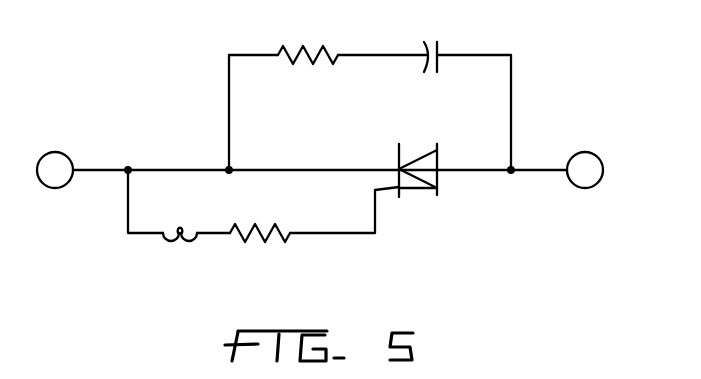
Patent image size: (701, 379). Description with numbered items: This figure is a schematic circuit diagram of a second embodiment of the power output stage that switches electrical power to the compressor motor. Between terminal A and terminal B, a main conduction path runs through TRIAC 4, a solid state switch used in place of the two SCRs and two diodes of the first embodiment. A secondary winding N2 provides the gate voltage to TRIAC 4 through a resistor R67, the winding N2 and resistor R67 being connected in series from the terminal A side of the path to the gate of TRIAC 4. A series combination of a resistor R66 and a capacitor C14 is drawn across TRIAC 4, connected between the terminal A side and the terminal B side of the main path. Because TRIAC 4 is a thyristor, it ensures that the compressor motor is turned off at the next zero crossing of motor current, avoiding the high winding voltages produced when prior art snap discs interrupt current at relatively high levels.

The terminal A is at (55, 170).
The terminal B is at (585, 170).
The resistor R66 is at (308, 41).
The capacitor C14 is at (432, 45).
The secondary winding N2 is at (180, 251).
The resistor R67 is at (260, 247).
The TRIAC 4 is at (439, 185).